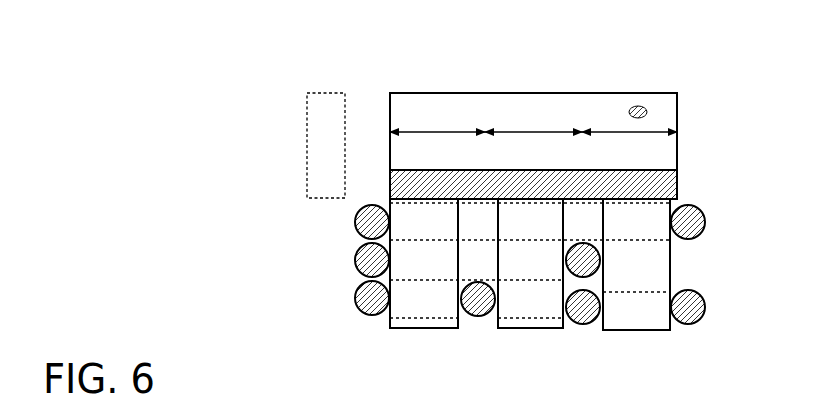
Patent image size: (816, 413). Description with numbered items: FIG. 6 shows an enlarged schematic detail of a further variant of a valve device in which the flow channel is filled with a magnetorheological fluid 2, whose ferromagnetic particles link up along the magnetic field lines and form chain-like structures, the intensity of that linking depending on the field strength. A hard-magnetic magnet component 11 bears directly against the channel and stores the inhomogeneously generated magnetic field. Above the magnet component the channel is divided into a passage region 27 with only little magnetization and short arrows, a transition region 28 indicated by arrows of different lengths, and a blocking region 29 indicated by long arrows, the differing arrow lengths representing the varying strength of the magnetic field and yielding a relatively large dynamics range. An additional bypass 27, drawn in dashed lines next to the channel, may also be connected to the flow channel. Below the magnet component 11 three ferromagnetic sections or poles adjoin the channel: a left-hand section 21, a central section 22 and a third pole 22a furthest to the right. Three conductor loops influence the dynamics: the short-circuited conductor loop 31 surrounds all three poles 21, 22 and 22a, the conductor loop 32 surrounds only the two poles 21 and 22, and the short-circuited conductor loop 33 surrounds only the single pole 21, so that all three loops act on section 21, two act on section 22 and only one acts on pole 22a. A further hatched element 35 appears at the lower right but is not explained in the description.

The magnetorheological fluid 2 is at (647, 110).
The hard-magnetic magnet component 11 is at (668, 186).
The section 21 is at (392, 332).
The section 22 is at (543, 320).
The third pole 22a is at (645, 320).
The passage region 27 is at (331, 130).
The transition region 28 is at (535, 132).
The blocking region 29 is at (612, 132).
The conductor loop 31 is at (354, 222).
The conductor loop 32 is at (354, 259).
The conductor loop 33 is at (354, 297).
The rolling element 35 is at (706, 305).